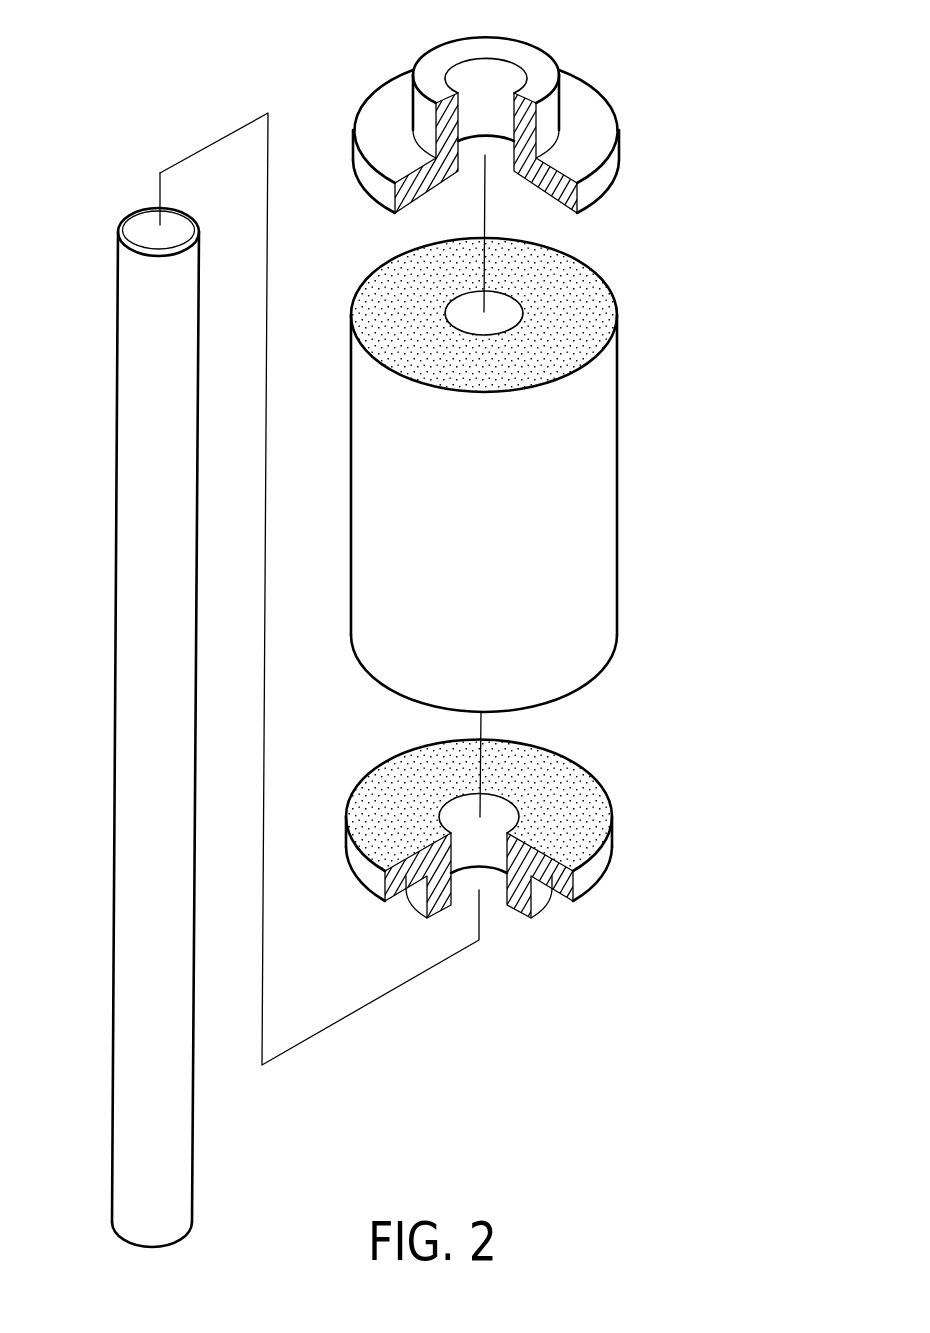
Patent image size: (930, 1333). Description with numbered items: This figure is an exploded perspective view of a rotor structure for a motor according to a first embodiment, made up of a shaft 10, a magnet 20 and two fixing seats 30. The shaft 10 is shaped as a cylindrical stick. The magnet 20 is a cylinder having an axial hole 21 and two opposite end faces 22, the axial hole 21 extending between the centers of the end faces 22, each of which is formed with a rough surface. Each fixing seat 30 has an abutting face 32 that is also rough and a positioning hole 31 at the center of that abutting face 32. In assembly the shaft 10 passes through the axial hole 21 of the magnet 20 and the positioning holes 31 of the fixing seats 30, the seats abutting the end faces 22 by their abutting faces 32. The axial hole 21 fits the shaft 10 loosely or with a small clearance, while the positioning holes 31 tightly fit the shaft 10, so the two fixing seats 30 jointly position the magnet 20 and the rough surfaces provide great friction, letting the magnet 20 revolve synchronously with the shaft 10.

The shaft 10 is at (137, 537).
The magnet 20 is at (588, 489).
The axial hole 21 is at (500, 307).
The end faces 22 is at (587, 337).
The fixing seat 30 is at (593, 118).
The positioning hole 31 is at (497, 72).
The abutting face 32 is at (428, 193).